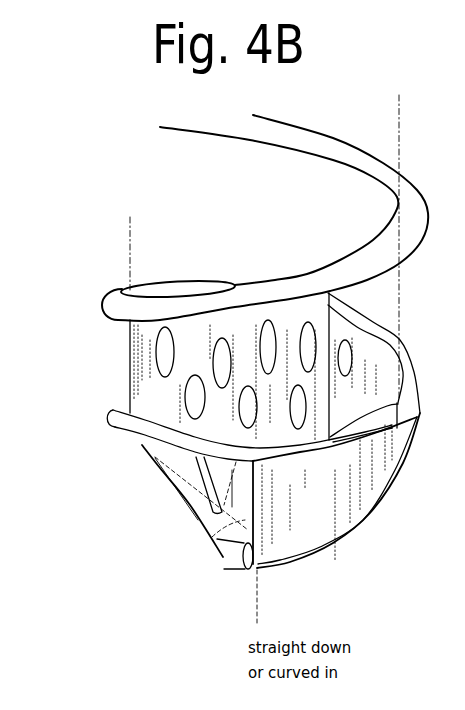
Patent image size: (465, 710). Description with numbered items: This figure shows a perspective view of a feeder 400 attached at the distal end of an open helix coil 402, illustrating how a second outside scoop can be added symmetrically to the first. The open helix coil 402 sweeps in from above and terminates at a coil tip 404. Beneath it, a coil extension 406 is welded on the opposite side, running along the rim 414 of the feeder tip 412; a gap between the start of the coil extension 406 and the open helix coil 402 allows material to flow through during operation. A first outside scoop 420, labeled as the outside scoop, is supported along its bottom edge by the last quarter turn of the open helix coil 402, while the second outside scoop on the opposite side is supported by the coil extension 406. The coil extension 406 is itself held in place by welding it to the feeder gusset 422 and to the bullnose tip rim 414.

The feeder 400 is at (49, 245).
The open helix coil 402 is at (357, 158).
The coil tip 404 is at (236, 556).
The coil extension 406 is at (108, 418).
The feeder tip 412 is at (208, 532).
The rim 414 is at (365, 431).
The first outside scoop 420 is at (377, 496).
The feeder gusset 422 is at (144, 360).